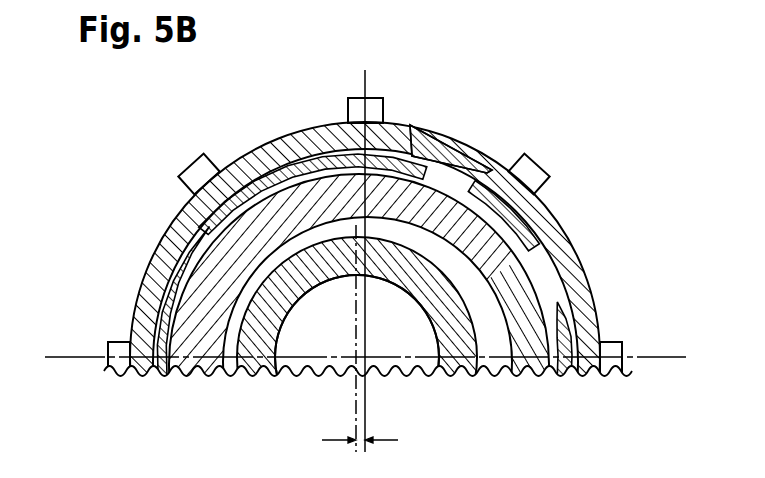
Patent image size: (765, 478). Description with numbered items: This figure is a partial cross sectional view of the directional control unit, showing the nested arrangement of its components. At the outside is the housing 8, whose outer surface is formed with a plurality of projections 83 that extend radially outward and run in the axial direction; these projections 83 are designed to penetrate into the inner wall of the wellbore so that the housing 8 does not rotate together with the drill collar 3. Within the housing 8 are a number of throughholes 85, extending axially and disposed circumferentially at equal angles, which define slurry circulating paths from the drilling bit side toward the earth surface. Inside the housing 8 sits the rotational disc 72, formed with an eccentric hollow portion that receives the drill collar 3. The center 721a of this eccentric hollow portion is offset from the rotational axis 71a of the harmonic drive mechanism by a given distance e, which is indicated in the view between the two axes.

The housing 8 is at (560, 226).
The rotational disc 72 is at (525, 375).
The drill collar 3 is at (458, 372).
The rotational axis 71a is at (350, 363).
The center of the eccentric hollow portion 721a is at (363, 360).
The projections 83 is at (202, 150).
The throughholes 85 is at (248, 190).
The given distance e is at (349, 436).